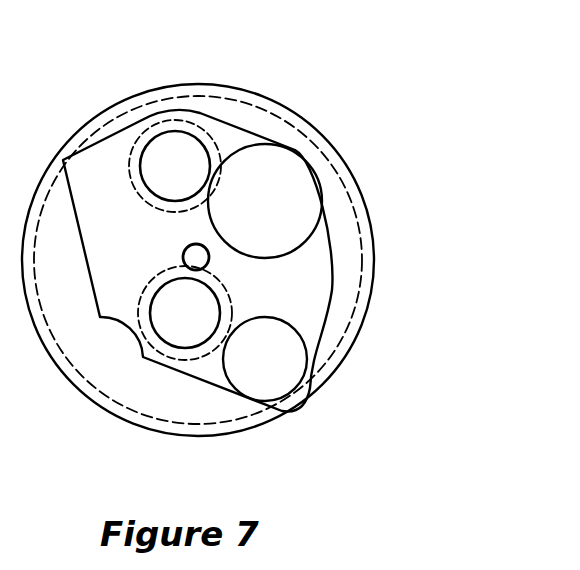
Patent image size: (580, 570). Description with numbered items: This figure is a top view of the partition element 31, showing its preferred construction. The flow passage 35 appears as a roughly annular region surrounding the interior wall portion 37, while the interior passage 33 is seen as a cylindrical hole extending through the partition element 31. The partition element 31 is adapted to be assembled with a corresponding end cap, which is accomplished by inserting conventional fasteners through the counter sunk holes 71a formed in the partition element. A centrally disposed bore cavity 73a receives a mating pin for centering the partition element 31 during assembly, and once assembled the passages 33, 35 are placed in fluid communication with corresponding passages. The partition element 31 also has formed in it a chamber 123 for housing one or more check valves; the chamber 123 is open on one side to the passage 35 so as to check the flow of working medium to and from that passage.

The partition element 31 is at (376, 203).
The interior passage 33 is at (277, 373).
The flow passage 35 is at (338, 313).
The interior wall portion 37 is at (333, 268).
The counter sunk holes 71a is at (207, 136).
The bore cavity 73a is at (182, 251).
The chamber 123 is at (278, 180).